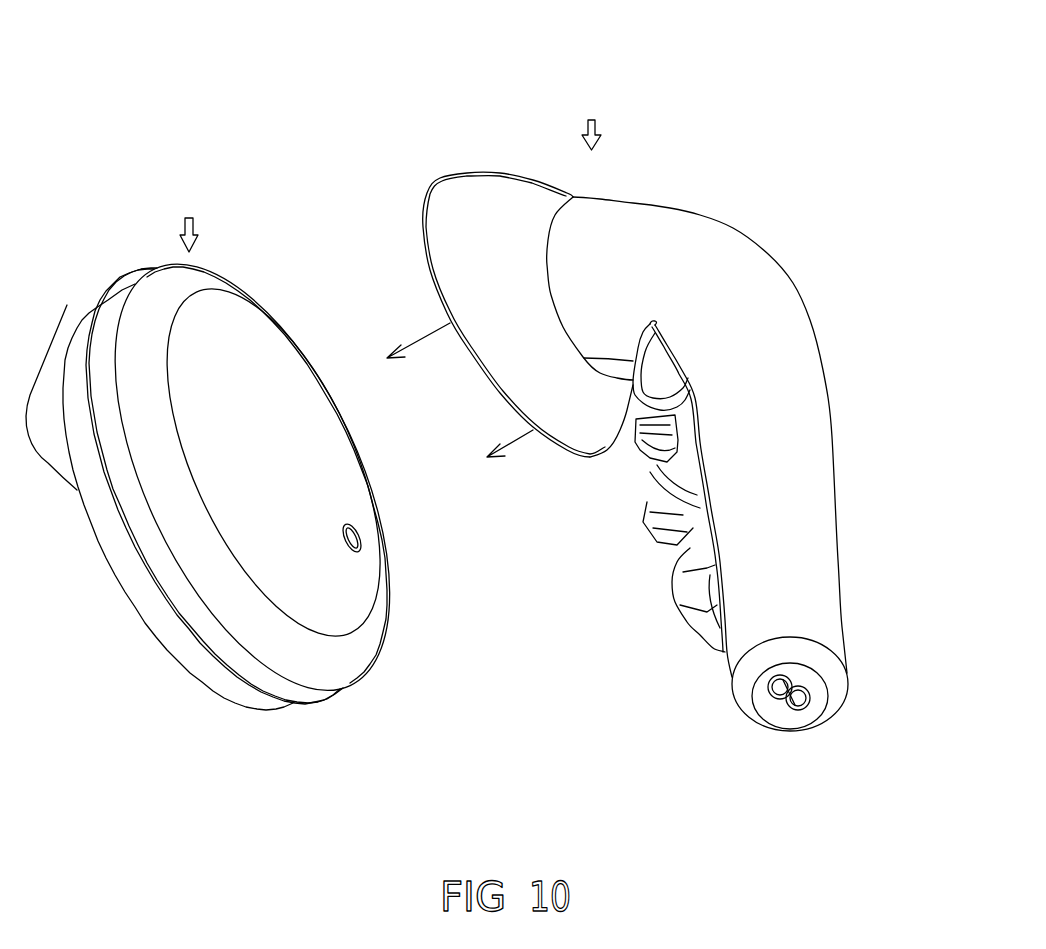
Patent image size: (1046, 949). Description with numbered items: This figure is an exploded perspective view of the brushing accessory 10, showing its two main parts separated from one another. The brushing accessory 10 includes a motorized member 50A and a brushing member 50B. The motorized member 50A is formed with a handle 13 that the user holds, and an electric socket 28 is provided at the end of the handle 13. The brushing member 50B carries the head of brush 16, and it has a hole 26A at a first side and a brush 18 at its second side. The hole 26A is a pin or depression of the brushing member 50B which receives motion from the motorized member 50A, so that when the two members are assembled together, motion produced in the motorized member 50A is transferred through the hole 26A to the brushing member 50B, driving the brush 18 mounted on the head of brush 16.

The brushing accessory 10 is at (661, 414).
The handle 13 is at (795, 487).
The head of brush 16 is at (273, 360).
The brush 18 is at (52, 385).
The pin or depression of brushing member 26A is at (355, 533).
The electric socket 28 is at (793, 705).
The motorized member 50A is at (586, 123).
The brushing member 50B is at (185, 221).